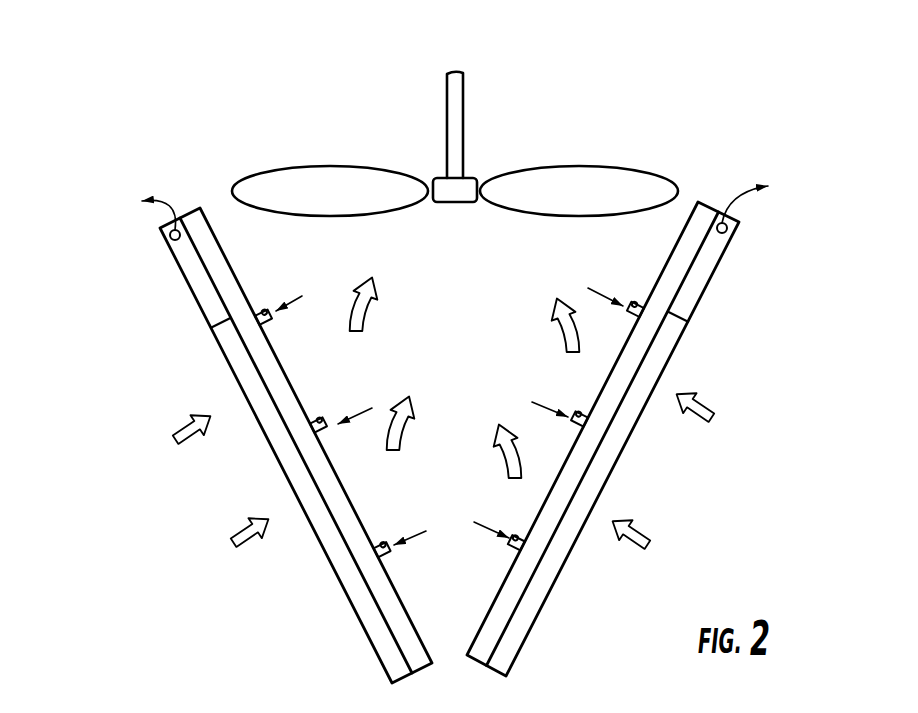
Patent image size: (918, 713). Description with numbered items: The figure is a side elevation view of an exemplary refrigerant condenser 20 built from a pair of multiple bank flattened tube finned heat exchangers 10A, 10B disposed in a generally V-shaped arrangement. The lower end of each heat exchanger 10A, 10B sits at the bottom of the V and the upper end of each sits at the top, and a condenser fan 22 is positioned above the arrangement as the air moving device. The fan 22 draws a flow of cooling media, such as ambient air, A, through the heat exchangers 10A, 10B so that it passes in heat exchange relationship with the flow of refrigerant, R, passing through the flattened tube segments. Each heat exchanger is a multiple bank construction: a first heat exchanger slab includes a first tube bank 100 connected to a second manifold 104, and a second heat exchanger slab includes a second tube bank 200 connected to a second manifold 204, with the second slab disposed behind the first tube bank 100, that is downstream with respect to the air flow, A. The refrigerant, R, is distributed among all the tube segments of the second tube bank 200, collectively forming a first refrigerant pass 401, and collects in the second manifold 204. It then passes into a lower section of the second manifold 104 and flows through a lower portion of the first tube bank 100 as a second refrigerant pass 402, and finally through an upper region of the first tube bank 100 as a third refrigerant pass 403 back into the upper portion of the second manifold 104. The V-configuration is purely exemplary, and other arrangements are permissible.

The refrigerant condenser 20 is at (433, 377).
The condenser fan 22 is at (447, 202).
The multiple bank flattened tube finned heat exchanger 10A is at (217, 375).
The multiple bank flattened tube finned heat exchanger 10B is at (697, 345).
The first tube bank 100 is at (468, 442).
The second manifold 104 is at (203, 310).
The second tube bank 200 is at (402, 590).
The second manifold 204 is at (233, 268).
The first refrigerant pass 401 is at (294, 403).
The second refrigerant pass 402 is at (290, 462).
The third refrigerant pass 403 is at (190, 270).
The refrigerant flow R is at (170, 202).
The air flow A is at (187, 442).